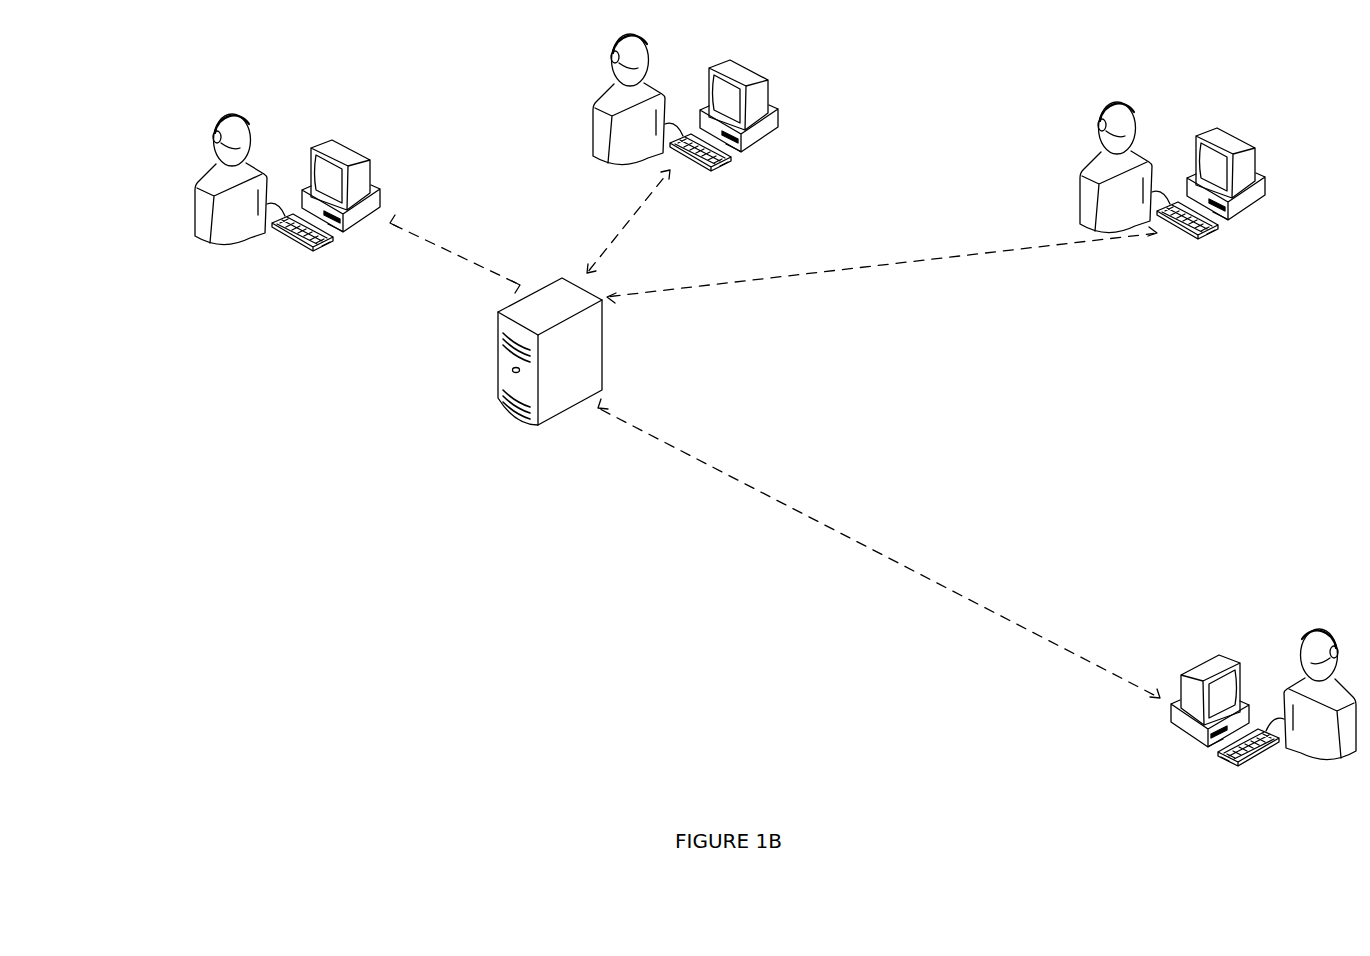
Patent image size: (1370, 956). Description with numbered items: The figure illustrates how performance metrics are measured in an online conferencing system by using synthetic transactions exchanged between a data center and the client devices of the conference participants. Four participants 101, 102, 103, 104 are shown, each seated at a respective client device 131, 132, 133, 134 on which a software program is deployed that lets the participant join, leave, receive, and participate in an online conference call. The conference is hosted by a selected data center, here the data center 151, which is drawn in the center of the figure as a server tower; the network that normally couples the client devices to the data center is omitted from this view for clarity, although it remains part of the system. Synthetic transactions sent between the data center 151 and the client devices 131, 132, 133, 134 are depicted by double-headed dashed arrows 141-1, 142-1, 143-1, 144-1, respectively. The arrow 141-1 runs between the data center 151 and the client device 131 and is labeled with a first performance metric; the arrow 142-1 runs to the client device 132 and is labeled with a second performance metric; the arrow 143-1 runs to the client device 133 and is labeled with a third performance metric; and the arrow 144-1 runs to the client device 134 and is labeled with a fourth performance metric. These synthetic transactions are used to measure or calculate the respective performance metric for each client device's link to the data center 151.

The participant 101 is at (213, 160).
The participant 102 is at (613, 80).
The participant 103 is at (1098, 152).
The participant 104 is at (1323, 630).
The client device 131 is at (343, 141).
The client device 132 is at (746, 60).
The client device 133 is at (1232, 131).
The client device 134 is at (1203, 743).
The data center 151 is at (602, 340).
The arrow 141-1 is at (411, 226).
The arrow 142-1 is at (649, 196).
The arrow 143-1 is at (834, 266).
The arrow 144-1 is at (748, 480).